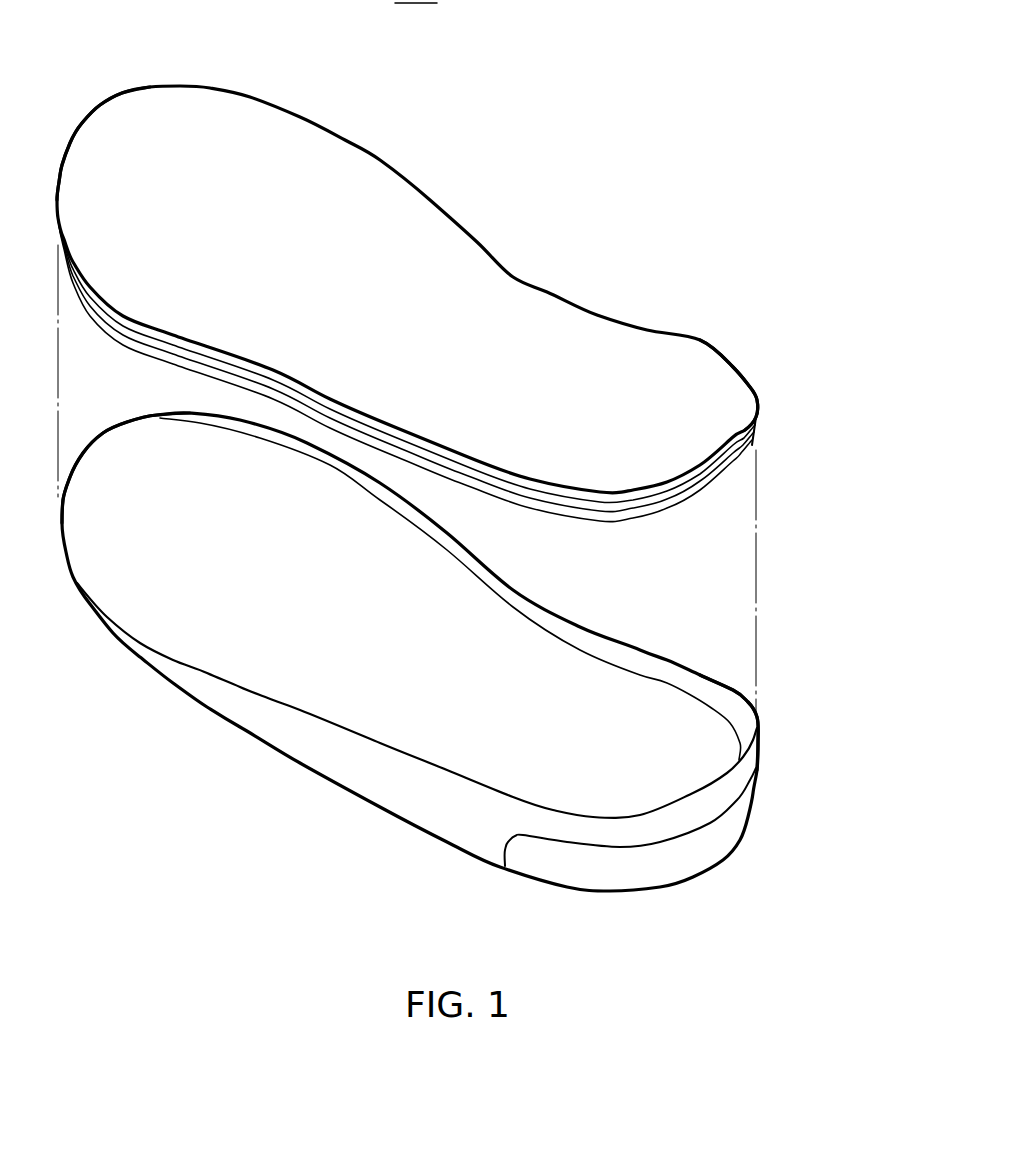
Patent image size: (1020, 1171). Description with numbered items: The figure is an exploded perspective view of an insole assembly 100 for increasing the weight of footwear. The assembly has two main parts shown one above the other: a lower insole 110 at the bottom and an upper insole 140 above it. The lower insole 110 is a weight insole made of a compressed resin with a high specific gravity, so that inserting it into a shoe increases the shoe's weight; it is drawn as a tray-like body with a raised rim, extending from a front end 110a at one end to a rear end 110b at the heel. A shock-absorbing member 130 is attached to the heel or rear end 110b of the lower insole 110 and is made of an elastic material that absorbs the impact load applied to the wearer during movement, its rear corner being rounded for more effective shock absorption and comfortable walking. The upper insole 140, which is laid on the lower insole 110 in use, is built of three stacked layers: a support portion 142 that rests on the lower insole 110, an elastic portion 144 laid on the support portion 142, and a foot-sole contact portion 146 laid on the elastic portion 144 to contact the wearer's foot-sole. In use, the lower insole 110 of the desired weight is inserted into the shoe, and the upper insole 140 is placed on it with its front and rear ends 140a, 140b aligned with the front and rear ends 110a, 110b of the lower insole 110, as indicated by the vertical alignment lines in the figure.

The insole assembly 100 is at (416, 2).
The lower insole 110 is at (320, 763).
The front end of the lower insole 110a is at (102, 430).
The rear end of the lower insole 110b is at (773, 723).
The shock-absorbing member 130 is at (617, 883).
The upper insole 140 is at (480, 243).
The front end of the upper insole 140a is at (101, 100).
The rear end of the upper insole 140b is at (755, 368).
The support portion 142 is at (712, 482).
The elastic portion 144 is at (728, 457).
The foot-sole contact portion 146 is at (745, 424).